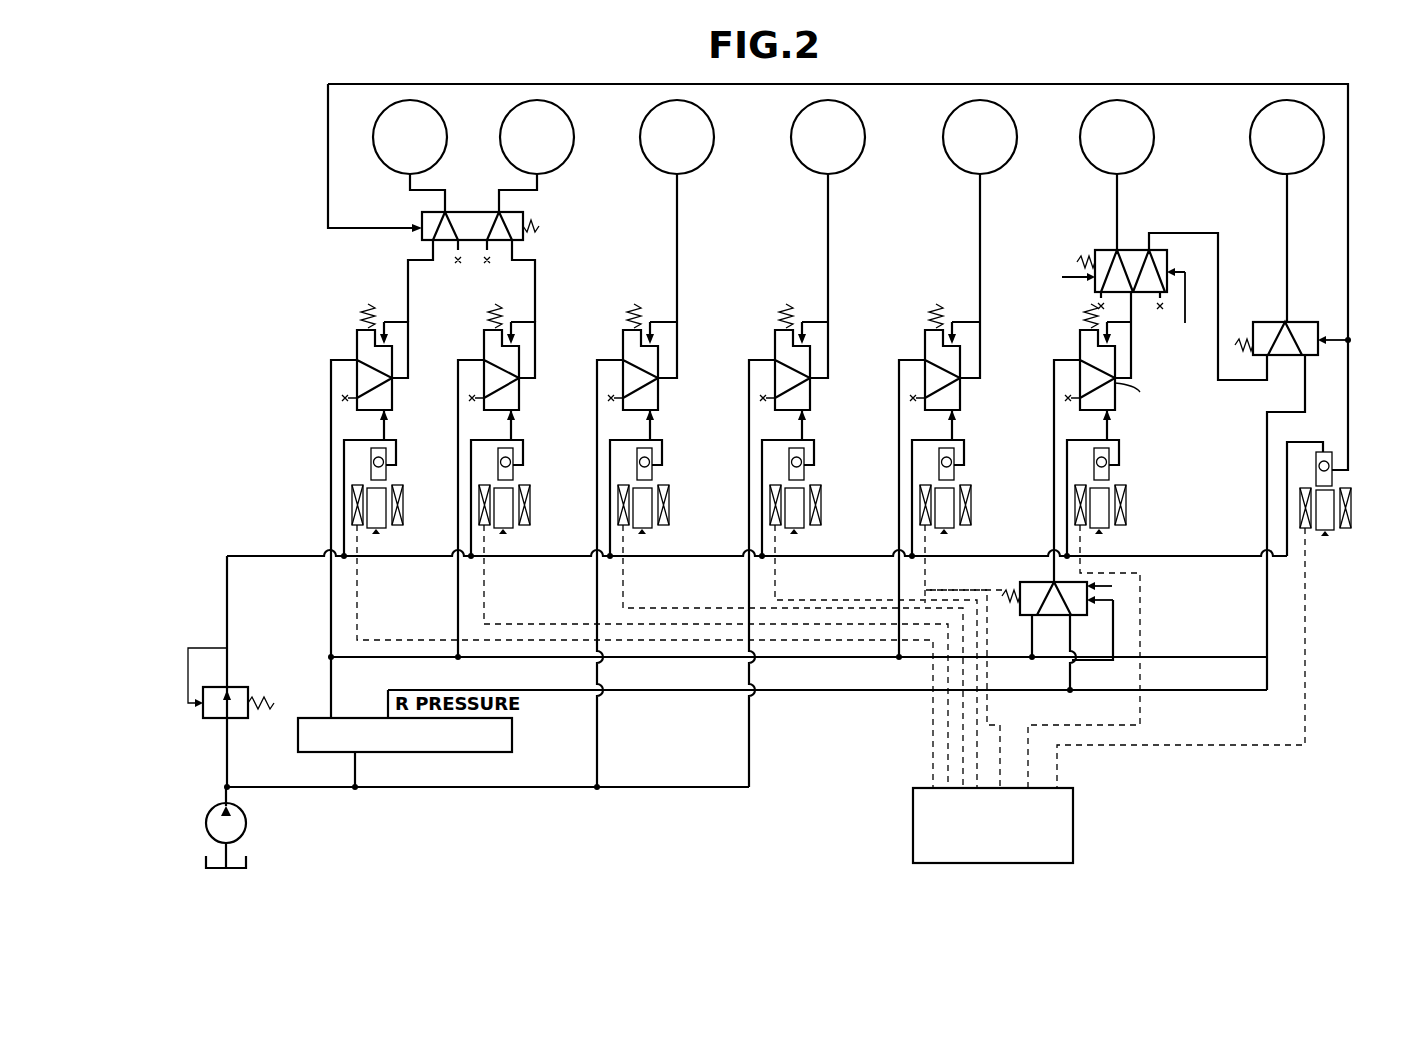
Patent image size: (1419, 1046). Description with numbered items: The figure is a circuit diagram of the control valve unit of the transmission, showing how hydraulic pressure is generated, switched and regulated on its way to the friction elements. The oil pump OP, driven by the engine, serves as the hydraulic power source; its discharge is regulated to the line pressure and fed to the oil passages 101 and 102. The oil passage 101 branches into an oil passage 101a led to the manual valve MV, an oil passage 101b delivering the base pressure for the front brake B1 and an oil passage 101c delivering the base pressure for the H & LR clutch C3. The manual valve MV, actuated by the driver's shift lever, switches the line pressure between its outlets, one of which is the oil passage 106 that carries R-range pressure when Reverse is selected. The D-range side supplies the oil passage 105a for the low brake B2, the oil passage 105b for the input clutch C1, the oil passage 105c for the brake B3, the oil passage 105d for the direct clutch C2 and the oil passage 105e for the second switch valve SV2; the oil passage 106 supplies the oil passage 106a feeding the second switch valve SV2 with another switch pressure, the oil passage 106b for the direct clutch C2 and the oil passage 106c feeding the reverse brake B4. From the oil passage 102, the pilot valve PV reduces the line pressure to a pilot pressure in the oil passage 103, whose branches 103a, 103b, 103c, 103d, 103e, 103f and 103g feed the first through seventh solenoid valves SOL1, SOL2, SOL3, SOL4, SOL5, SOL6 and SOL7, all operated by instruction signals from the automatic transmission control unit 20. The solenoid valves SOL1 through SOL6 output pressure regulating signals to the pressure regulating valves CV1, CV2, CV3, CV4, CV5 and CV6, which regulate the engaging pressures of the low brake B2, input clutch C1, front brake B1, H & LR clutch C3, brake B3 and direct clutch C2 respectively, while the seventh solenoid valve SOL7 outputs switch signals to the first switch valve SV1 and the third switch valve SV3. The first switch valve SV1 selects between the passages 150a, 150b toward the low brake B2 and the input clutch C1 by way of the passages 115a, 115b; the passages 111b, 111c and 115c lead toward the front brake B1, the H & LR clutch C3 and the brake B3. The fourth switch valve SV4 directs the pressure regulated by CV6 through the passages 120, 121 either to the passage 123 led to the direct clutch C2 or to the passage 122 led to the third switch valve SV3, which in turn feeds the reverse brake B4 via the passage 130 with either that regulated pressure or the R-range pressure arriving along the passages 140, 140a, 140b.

The automatic transmission control unit 20 is at (1074, 827).
The oil passage 101 is at (253, 785).
The oil passage 101a is at (356, 771).
The oil passage 101b is at (598, 733).
The oil passage 101c is at (750, 743).
The oil passage 102 is at (226, 743).
The oil passage 103 is at (263, 554).
The oil passage 103a is at (343, 470).
The oil passage 103b is at (470, 440).
The oil passage 103c is at (609, 440).
The oil passage 103d is at (761, 440).
The oil passage 103e is at (911, 440).
The oil passage 103f is at (1066, 440).
The oil passage 103g is at (1286, 446).
The oil passage 105a is at (330, 596).
The oil passage 105b is at (457, 596).
The oil passage 105c is at (898, 588).
The oil passage 105d is at (1030, 660).
The oil passage 105e is at (1114, 642).
The oil passage 106 is at (497, 658).
The oil passage 106a is at (1003, 588).
The oil passage 106b is at (1072, 692).
The oil passage 106c is at (1266, 660).
The passage to front brake F/B 111b is at (678, 235).
The passage to high and low reverse clutch 111c is at (829, 235).
The passage from switching valve SV1 to control valve CV1 115a is at (407, 276).
The passage from switching valve SV1 to control valve CV2 115b is at (536, 276).
The passage to 2346 brake 115c is at (981, 233).
The passage to control valve CV6 120 is at (1053, 366).
The passage from control valve CV6 121 is at (1140, 392).
The passage 122 is at (1219, 246).
The passage 123 is at (1116, 190).
The passage to reverse brake R/B 130 is at (1288, 232).
The passage to SOL7 140 is at (1348, 385).
The passage to switching valve SV3 140a is at (1338, 336).
The passage to switching valve SV1 140b is at (328, 197).
The passage to low brake LOW/B 150a is at (420, 182).
The passage to input clutch I/C 150b is at (545, 184).
The front brake B1 is at (706, 105).
The low brake B2 is at (440, 105).
The 2346 brake B3 is at (1010, 105).
The reverse brake B4 is at (1256, 168).
The input clutch C1 is at (565, 105).
The direct clutch C2 is at (1146, 108).
The H & LR clutch C3 is at (857, 105).
The first pressure regulating valve CV1 is at (354, 334).
The second pressure regulating valve CV2 is at (481, 334).
The third pressure regulating valve CV3 is at (620, 334).
The fourth pressure regulating valve CV4 is at (772, 334).
The fifth pressure regulating valve CV5 is at (922, 334).
The sixth pressure regulating valve CV6 is at (1077, 336).
The first solenoid valve SOL1 is at (407, 492).
The second solenoid valve SOL2 is at (534, 488).
The third solenoid valve SOL3 is at (672, 488).
The fourth solenoid valve SOL4 is at (822, 488).
The fifth solenoid valve SOL5 is at (974, 488).
The sixth solenoid valve SOL6 is at (1127, 488).
The seventh solenoid valve SOL7 is at (1354, 536).
The first switch valve SV1 is at (420, 210).
The second switch valve SV2 is at (1112, 586).
The third switch valve SV3 is at (1276, 320).
The fourth switch valve SV4 is at (1128, 248).
The pilot valve PV is at (234, 683).
The manual valve MV is at (513, 738).
The oil pump OP is at (244, 840).